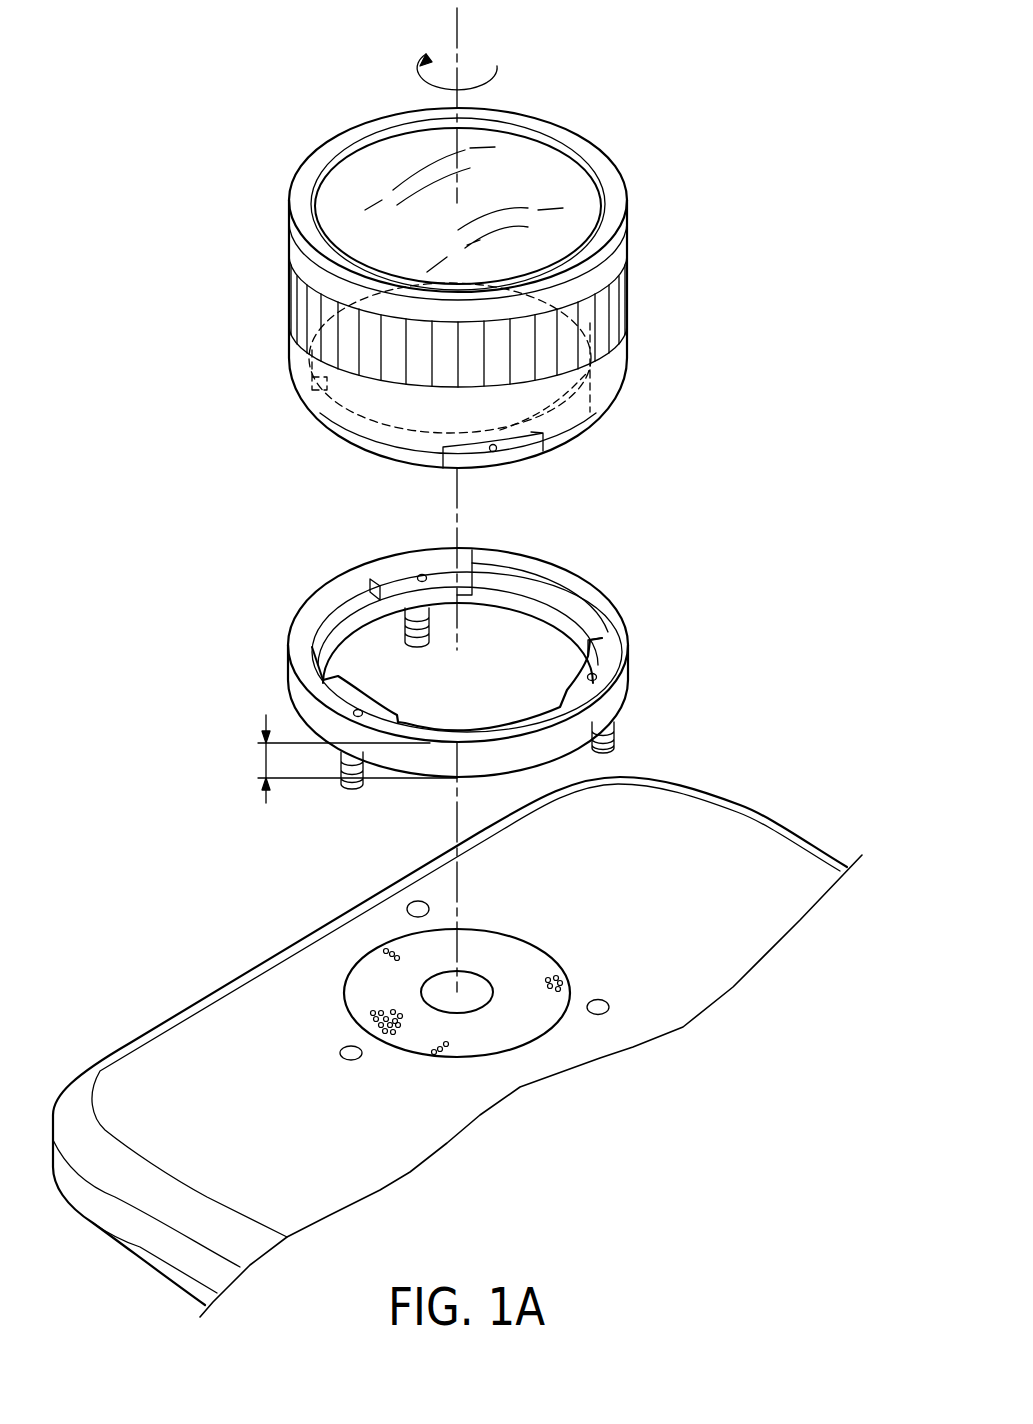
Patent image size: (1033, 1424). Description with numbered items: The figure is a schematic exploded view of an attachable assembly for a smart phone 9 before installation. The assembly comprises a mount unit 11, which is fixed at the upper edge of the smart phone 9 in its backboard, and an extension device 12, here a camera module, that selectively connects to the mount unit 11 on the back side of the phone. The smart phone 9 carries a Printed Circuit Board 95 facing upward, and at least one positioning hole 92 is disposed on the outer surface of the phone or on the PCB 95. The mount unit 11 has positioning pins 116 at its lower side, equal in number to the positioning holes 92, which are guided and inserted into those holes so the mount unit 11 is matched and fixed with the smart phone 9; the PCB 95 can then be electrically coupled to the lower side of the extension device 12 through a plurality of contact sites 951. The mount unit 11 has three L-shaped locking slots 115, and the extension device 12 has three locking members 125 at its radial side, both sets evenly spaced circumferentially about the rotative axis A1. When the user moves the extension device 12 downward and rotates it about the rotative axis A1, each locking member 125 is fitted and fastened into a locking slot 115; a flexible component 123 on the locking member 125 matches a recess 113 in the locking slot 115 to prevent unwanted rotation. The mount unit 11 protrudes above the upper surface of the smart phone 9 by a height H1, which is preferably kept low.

The rotative axis A1 is at (459, 30).
The extension device 12 is at (663, 234).
The flexible component 123 is at (592, 371).
The locking member 125 is at (485, 462).
The mount unit 11 is at (657, 600).
The recess 113 is at (417, 572).
The positioning pin 116 is at (425, 635).
The locking slot 115 is at (382, 598).
The height H1 is at (346, 759).
The smart phone 9 is at (728, 830).
The positioning hole 92 is at (418, 901).
The Printed Circuit Board (PCB) 95 is at (375, 983).
The contact site 951 is at (385, 948).